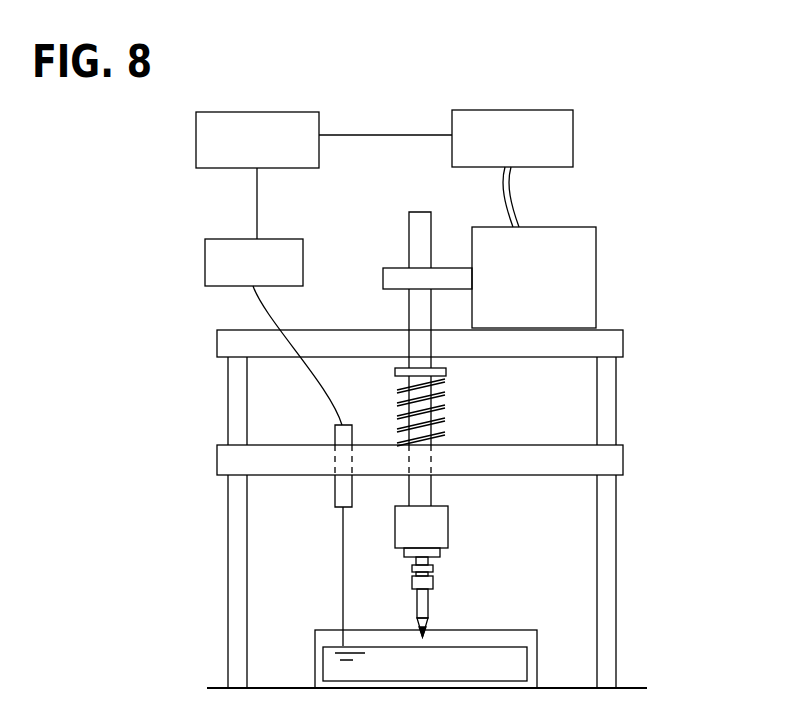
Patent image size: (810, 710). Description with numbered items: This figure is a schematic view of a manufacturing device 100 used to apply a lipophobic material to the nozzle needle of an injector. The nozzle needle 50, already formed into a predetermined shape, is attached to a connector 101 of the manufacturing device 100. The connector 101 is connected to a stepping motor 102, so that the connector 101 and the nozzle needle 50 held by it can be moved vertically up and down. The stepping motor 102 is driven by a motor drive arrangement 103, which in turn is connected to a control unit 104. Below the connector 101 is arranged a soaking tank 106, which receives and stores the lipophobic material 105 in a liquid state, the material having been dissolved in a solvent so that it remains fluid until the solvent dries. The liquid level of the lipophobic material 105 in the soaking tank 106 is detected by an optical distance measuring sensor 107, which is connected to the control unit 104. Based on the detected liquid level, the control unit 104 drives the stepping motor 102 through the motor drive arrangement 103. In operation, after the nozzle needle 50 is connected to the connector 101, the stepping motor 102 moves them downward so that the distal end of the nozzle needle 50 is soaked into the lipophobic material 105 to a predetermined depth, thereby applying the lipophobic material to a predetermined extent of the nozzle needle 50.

The manufacturing device 100 is at (447, 73).
The connector 101 is at (442, 536).
The stepping motor 102 is at (588, 269).
The motor drive arrangement 103 is at (567, 136).
The control unit 104 is at (233, 110).
The lipophobic material 105 is at (507, 665).
The soaking tank 106 is at (315, 657).
The optical distance measuring sensor 107 is at (335, 488).
The nozzle needle 50 is at (428, 607).